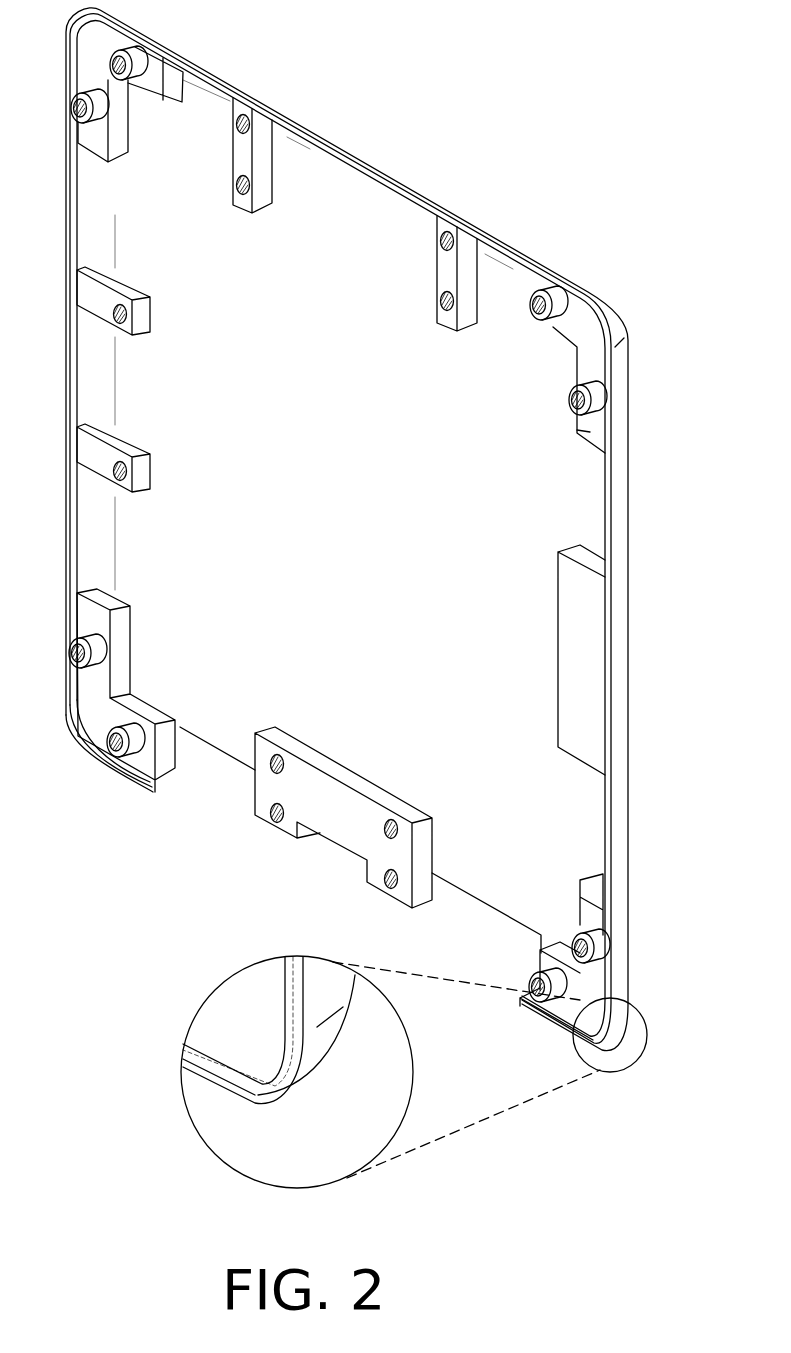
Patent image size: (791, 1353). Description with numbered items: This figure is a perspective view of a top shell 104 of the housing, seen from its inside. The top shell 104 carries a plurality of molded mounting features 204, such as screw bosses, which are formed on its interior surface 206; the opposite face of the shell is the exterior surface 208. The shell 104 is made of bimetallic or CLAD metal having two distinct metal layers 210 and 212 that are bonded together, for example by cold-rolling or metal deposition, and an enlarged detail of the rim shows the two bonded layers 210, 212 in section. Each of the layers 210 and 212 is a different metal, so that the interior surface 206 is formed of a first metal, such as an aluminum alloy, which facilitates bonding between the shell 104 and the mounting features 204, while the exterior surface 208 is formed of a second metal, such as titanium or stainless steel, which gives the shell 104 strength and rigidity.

The top shell 104 is at (519, 130).
The molded mounting features 204 is at (120, 143).
The interior surface 206 is at (366, 636).
The exterior surface 208 is at (618, 768).
The metal layer 210 is at (205, 1085).
The metal layer 212 is at (217, 1065).